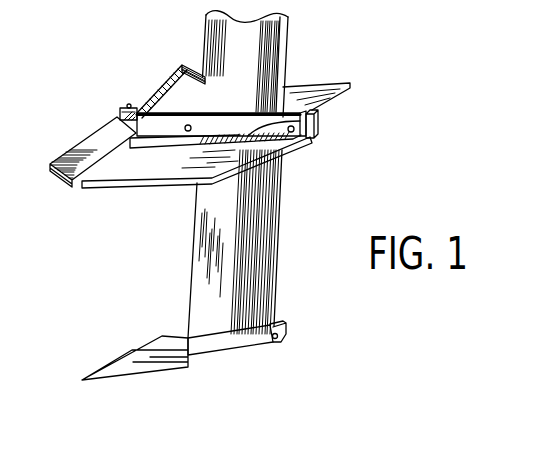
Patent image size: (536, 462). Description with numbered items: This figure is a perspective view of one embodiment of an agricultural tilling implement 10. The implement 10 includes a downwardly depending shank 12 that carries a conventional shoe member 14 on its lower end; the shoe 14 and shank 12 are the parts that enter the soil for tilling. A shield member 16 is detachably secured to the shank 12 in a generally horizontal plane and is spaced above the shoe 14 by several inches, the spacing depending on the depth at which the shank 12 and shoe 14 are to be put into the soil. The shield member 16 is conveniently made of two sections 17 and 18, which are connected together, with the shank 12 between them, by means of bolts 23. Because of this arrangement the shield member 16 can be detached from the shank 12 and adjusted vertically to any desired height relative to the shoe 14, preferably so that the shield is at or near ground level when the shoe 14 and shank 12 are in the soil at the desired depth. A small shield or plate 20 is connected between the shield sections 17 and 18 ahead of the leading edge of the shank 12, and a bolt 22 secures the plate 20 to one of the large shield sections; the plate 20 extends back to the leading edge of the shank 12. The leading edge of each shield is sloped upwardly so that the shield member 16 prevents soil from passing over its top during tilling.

The agricultural tilling implement 10 is at (405, 80).
The shank 12 is at (268, 41).
The shoe member 14 is at (170, 357).
The shield member 16 is at (326, 123).
The shield section 17 is at (133, 174).
The shield section 18 is at (330, 84).
The small shield or plate 20 is at (117, 114).
The bolt 22 is at (132, 112).
The bolts 23 is at (188, 132).